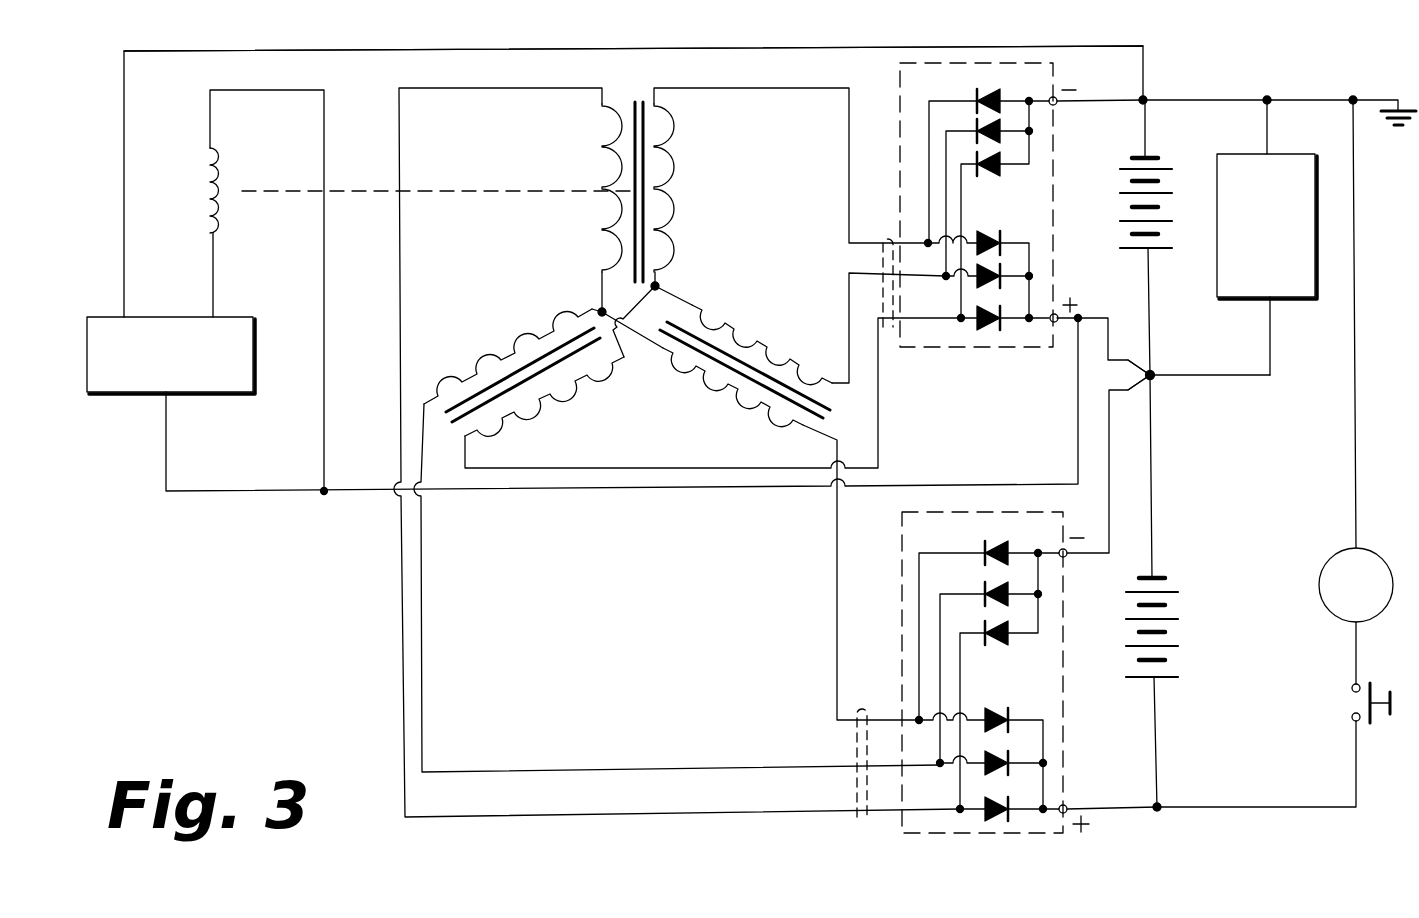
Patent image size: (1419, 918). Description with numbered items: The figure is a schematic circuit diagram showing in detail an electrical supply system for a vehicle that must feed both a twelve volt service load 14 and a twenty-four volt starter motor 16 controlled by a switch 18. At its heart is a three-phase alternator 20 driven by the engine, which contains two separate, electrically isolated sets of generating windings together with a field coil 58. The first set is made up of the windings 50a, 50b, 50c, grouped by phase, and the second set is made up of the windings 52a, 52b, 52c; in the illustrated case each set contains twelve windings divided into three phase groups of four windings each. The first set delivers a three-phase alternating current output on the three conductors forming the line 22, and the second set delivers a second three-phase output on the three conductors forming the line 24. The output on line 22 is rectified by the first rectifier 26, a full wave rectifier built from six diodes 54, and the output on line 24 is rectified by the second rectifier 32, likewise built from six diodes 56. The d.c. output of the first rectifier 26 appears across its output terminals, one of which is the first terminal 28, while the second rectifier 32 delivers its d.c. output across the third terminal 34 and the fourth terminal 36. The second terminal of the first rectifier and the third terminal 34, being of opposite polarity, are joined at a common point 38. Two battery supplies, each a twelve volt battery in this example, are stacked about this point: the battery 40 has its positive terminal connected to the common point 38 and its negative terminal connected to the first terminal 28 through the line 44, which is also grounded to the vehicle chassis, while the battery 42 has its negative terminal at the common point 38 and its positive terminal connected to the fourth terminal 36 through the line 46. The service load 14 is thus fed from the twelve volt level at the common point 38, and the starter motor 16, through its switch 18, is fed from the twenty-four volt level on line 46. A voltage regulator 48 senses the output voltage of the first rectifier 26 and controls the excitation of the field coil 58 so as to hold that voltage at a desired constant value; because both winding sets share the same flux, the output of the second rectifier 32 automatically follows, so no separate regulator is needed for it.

The service load 14 is at (1300, 290).
The starter motor 16 is at (1374, 560).
The switch 18 is at (1352, 708).
The alternator 20 is at (660, 44).
The line 22 is at (884, 237).
The line 24 is at (858, 820).
The first rectifier 26 is at (1055, 262).
The first terminal 28 is at (1057, 104).
The second rectifier 32 is at (1064, 712).
The third terminal 34 is at (1065, 557).
The fourth terminal 36 is at (1068, 806).
The common point 38 is at (1155, 380).
The battery supply 40 is at (1165, 182).
The battery supply 42 is at (1168, 657).
The line 44 is at (1228, 95).
The line 46 is at (1128, 813).
The voltage regulator 48 is at (120, 394).
The generating winding 50a is at (577, 397).
The generating winding 50b is at (706, 318).
The generating winding 50c is at (675, 125).
The generating winding 52a is at (543, 318).
The generating winding 52b is at (748, 418).
The generating winding 52c is at (607, 253).
The diodes 54 is at (1000, 178).
The diodes 56 is at (1003, 647).
The field coil 58 is at (237, 168).